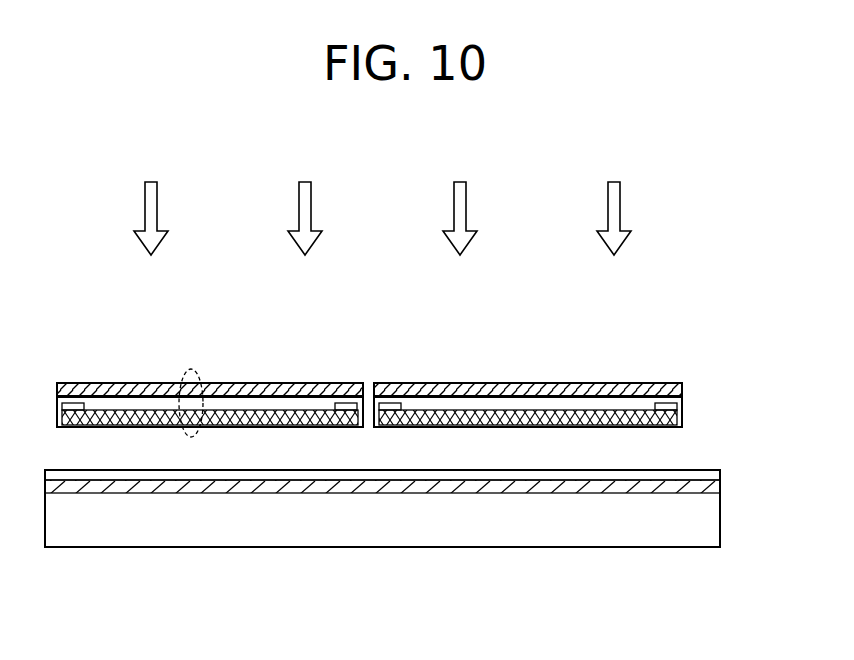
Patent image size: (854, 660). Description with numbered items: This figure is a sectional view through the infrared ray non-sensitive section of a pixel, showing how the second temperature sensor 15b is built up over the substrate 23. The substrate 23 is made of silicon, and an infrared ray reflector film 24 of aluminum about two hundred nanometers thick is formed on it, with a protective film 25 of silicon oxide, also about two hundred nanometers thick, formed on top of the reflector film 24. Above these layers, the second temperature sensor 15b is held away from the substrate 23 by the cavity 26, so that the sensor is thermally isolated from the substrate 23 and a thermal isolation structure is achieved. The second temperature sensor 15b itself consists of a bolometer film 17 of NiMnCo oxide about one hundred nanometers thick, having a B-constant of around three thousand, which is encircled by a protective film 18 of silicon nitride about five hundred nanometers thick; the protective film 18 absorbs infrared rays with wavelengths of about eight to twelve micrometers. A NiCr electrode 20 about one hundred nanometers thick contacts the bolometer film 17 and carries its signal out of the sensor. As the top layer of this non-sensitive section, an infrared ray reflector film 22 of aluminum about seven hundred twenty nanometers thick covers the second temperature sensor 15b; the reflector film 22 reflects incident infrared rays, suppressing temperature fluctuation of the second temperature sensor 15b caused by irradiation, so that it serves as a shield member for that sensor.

The second temperature sensor 15b is at (192, 370).
The infrared ray reflector film 22 is at (270, 393).
The NiCr electrode 20 is at (394, 406).
The protective film 18 is at (458, 427).
The bolometer film 17 is at (525, 412).
The cavity 26 is at (112, 430).
The protective film 25 is at (717, 477).
The infrared ray reflector film 24 is at (717, 490).
The substrate 23 is at (165, 528).